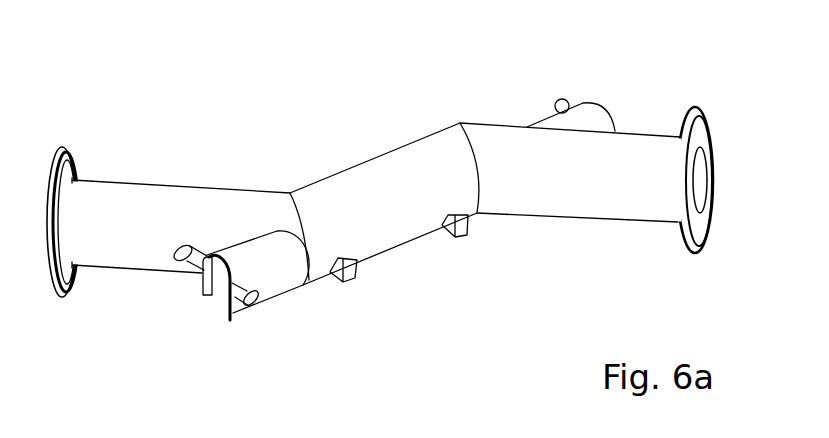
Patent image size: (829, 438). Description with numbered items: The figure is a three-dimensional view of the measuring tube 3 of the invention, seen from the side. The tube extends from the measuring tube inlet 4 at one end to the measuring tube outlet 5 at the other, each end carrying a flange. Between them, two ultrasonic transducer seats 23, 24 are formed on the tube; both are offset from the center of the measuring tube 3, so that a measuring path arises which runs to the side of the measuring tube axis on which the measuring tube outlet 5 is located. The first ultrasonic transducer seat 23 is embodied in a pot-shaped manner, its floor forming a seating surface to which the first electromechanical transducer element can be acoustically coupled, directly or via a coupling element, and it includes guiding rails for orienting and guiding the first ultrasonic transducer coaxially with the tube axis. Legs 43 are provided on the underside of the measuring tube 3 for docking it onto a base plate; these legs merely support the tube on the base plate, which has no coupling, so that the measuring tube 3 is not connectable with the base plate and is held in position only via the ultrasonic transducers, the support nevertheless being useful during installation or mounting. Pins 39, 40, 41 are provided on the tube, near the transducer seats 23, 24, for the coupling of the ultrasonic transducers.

The measuring tube 3 is at (380, 180).
The measuring tube inlet 4 is at (190, 207).
The measuring tube outlet 5 is at (635, 152).
The first ultrasonic transducer seat 23 is at (285, 275).
The ultrasonic transducer seat 24 is at (588, 120).
The pin 39 is at (220, 305).
The pin 40 is at (187, 257).
The pin 41 is at (562, 100).
The legs 43 is at (465, 234).